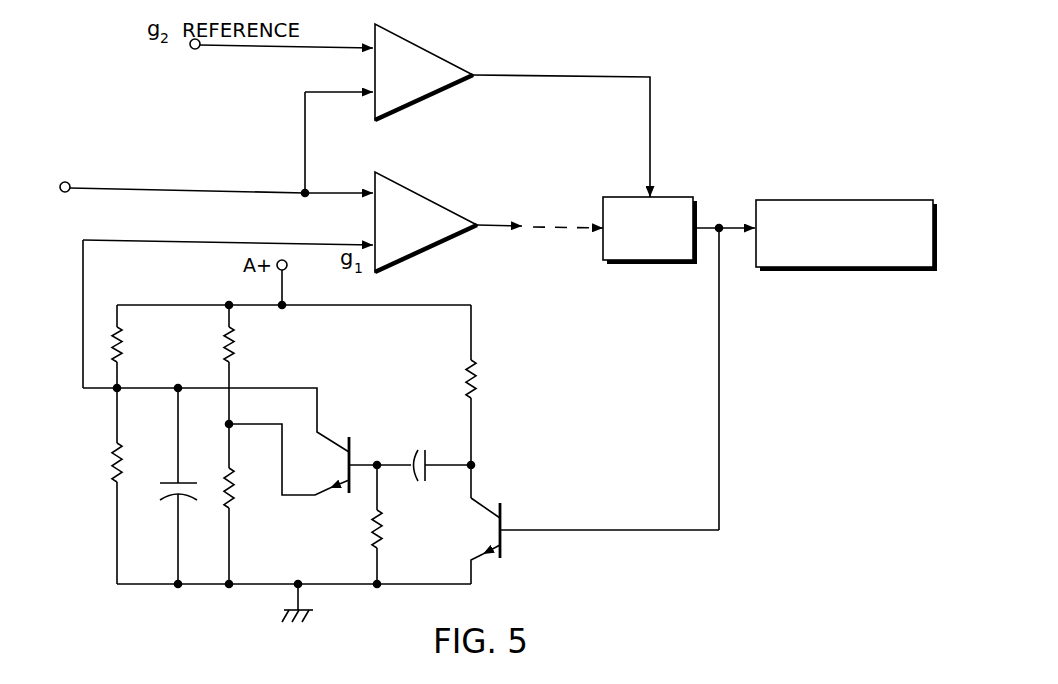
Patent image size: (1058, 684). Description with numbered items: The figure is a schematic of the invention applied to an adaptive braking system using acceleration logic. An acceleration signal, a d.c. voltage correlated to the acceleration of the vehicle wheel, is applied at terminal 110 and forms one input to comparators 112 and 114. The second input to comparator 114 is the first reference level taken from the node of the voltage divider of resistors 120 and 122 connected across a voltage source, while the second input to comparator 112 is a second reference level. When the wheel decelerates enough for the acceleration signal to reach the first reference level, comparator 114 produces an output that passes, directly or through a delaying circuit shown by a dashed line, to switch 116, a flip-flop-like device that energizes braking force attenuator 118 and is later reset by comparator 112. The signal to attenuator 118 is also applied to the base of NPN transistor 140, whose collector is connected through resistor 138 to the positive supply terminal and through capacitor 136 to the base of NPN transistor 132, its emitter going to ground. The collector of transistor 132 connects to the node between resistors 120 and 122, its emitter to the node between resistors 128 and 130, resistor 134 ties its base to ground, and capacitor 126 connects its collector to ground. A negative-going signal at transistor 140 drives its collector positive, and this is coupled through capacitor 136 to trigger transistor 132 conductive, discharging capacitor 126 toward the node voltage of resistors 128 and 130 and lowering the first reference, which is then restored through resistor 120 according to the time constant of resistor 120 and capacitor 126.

The terminal 110 is at (61, 192).
The comparator 112 is at (433, 98).
The comparator 114 is at (420, 192).
The switch 116 is at (657, 262).
The braking force attenuator 118 is at (852, 200).
The resistor 120 is at (124, 340).
The resistor 122 is at (109, 462).
The capacitor 126 is at (168, 489).
The resistor 128 is at (237, 340).
The resistor 130 is at (237, 480).
The transistor 132 is at (345, 460).
The resistor 134 is at (372, 537).
The capacitor 136 is at (428, 453).
The resistor 138 is at (479, 371).
The transistor 140 is at (497, 522).